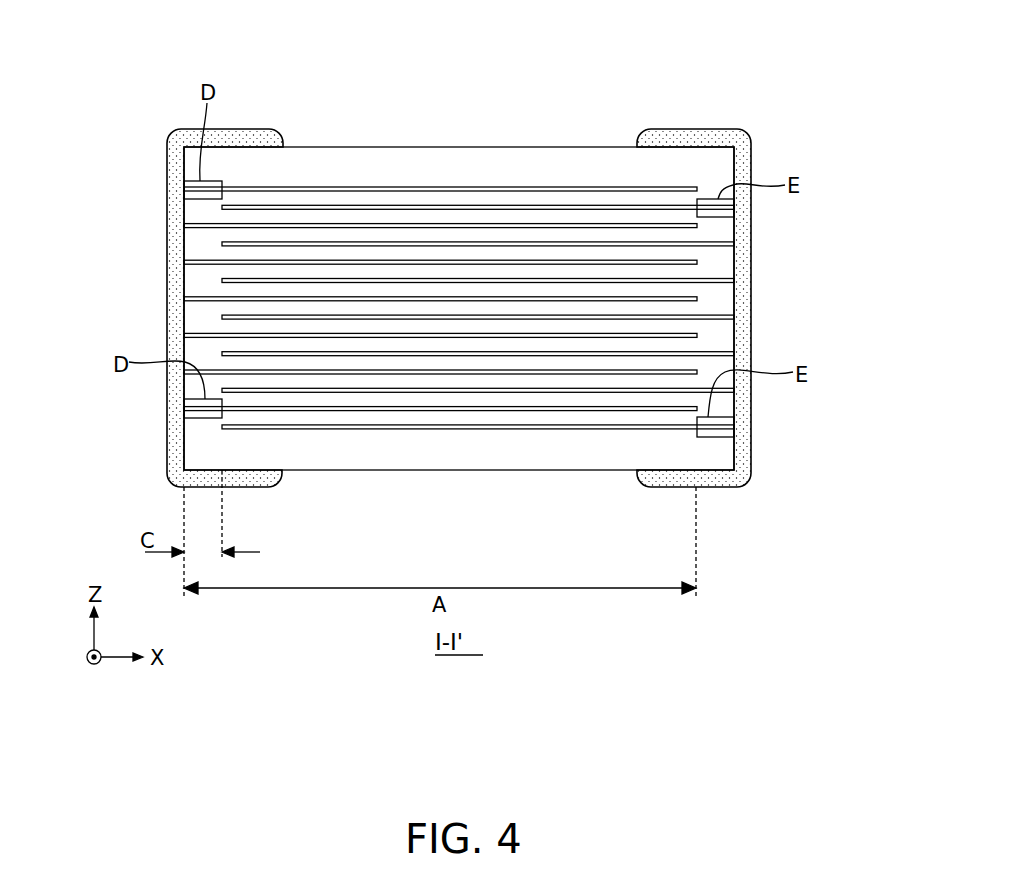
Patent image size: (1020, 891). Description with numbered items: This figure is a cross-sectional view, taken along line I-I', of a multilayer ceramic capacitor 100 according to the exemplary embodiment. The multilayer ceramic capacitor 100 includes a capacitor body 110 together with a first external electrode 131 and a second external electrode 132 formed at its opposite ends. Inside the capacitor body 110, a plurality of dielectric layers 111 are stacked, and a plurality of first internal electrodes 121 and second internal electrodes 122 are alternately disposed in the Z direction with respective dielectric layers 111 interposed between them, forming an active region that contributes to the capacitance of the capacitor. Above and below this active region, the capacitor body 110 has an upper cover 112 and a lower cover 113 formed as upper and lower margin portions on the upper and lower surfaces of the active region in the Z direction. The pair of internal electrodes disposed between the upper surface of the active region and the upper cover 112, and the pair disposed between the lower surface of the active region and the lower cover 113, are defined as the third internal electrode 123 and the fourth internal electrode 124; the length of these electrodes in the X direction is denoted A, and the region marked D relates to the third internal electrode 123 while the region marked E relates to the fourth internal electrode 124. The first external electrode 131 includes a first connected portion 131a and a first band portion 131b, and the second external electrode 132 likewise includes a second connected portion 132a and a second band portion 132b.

The multilayer ceramic capacitor 100 is at (732, 116).
The capacitor body 110 is at (455, 147).
The dielectric layer 111 is at (720, 302).
The upper cover 112 is at (523, 170).
The lower cover 113 is at (583, 452).
The first internal electrode 121 is at (377, 224).
The second internal electrode 122 is at (587, 242).
The third internal electrode 123 is at (302, 188).
The fourth internal electrode 124 is at (648, 206).
The first external electrode 131 is at (87, 430).
The first connected portion 131a is at (175, 440).
The first band portion 131b is at (205, 478).
The second external electrode 132 is at (840, 430).
The second connected portion 132a is at (742, 440).
The second band portion 132b is at (705, 478).